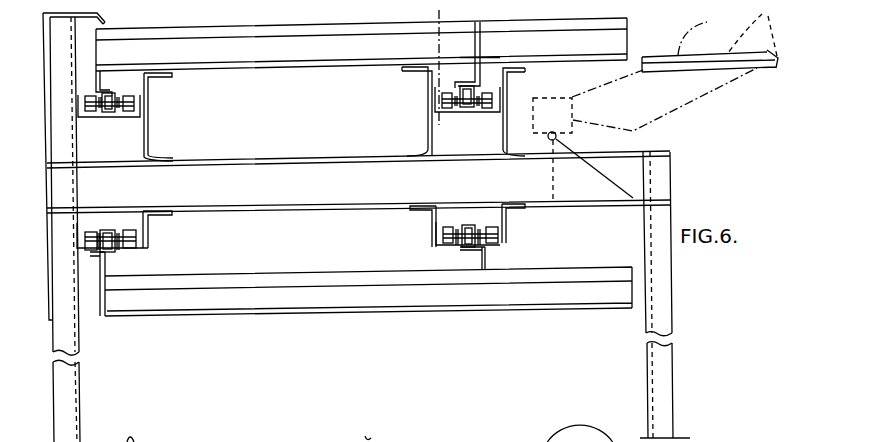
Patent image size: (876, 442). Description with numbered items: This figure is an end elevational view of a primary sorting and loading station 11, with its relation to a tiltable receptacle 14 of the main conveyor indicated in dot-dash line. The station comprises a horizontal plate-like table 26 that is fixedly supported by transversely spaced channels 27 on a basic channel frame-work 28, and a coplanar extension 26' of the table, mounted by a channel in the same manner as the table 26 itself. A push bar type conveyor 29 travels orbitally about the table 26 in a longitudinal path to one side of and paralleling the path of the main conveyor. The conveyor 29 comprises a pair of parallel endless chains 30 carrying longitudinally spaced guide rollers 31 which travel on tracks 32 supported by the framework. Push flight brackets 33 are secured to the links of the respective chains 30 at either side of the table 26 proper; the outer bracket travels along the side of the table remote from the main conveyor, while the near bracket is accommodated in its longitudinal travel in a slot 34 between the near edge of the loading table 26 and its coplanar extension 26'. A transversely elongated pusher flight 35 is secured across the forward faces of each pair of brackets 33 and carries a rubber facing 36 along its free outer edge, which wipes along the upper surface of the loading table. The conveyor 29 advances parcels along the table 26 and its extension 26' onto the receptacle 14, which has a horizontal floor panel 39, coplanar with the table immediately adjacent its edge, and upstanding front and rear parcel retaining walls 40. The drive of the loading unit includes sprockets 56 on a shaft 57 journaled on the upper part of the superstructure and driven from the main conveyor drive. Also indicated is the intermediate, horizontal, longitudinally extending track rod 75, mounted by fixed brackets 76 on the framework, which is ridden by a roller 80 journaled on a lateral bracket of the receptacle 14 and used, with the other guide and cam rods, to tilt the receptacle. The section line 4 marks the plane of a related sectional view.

The section line 4- 4 is at (444, 15).
The primary sorting and loading station 11 is at (513, 320).
The receptacle 14 is at (739, 72).
The table 26 is at (361, 67).
The coplanar extension 26' is at (631, 34).
The channel 27 is at (148, 148).
The channel frame-work 28 is at (297, 210).
The push bar type conveyor 29 is at (563, 268).
The endless chain 30 is at (113, 92).
The guide roller 31 is at (88, 103).
The track 32 is at (83, 117).
The push flight bracket 33 is at (95, 50).
The slot 34 is at (482, 52).
The pusher flight 35 is at (260, 50).
The rubber facing 36 is at (602, 302).
The floor panel 39 is at (752, 28).
The parcel retaining wall 40 is at (705, 24).
The sprocket 56 is at (371, 438).
The shaft 57 is at (370, 430).
The track rod 75 is at (664, 106).
The fixed bracket 76 is at (673, 286).
The roller 80 is at (558, 98).